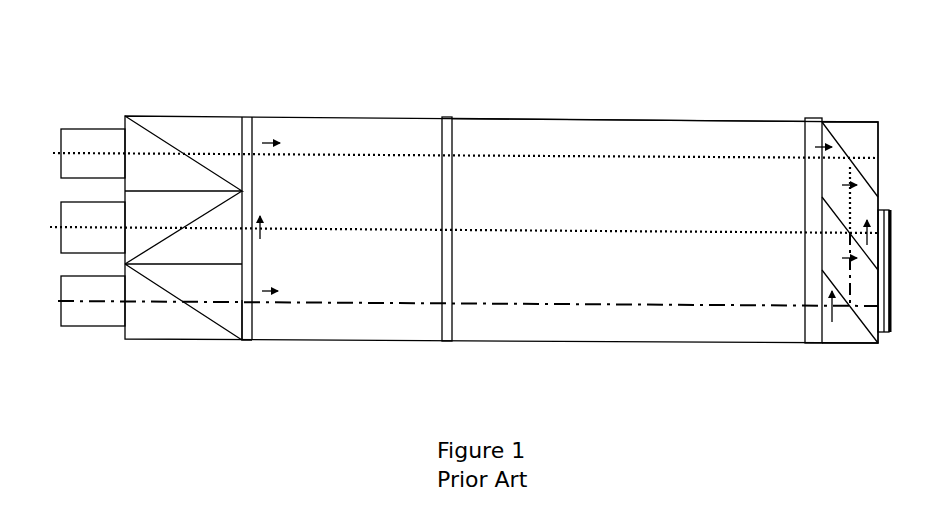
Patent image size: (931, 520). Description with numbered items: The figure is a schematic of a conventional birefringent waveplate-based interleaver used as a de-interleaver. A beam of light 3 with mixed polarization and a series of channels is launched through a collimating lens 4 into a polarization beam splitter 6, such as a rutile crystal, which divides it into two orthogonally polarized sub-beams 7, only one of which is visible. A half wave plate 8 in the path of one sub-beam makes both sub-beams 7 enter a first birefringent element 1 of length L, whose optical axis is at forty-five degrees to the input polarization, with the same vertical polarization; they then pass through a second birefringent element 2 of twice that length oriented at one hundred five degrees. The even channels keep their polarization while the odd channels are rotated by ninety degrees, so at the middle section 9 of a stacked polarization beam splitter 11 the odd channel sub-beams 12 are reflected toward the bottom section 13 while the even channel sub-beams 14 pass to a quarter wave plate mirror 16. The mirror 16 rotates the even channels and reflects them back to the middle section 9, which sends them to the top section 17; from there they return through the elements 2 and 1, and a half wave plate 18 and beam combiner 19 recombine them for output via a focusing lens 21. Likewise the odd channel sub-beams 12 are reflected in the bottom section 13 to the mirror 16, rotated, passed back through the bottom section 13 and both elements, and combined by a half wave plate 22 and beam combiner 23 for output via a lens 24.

The first birefringent element 1 is at (364, 103).
The second birefringent element 2 is at (593, 104).
The beam of light 3 is at (48, 227).
The collimating lens 4 is at (64, 242).
The polarization beam splitter 6 is at (195, 259).
The sub-beams 7 is at (359, 229).
The half wave plate 8 is at (243, 262).
The middle section 9 is at (833, 198).
The stacked polarization beam splitter 11 is at (844, 108).
The odd channel sub-beams 12 is at (722, 313).
The bottom section 13 is at (834, 330).
The even channel sub-beams 14 is at (672, 152).
The quarter wave plate mirror 16 is at (890, 357).
The top section 17 is at (867, 163).
The half wave plate 18 is at (247, 118).
The beam combiner 19 is at (198, 117).
The focusing lens 21 is at (88, 128).
The half wave plate 22 is at (242, 340).
The beam combiner 23 is at (162, 323).
The lens 24 is at (79, 326).